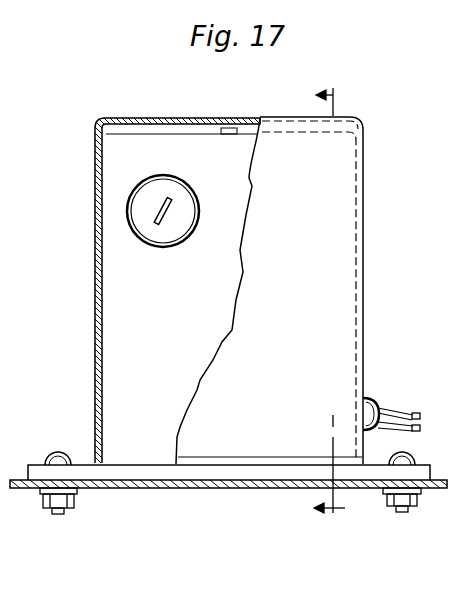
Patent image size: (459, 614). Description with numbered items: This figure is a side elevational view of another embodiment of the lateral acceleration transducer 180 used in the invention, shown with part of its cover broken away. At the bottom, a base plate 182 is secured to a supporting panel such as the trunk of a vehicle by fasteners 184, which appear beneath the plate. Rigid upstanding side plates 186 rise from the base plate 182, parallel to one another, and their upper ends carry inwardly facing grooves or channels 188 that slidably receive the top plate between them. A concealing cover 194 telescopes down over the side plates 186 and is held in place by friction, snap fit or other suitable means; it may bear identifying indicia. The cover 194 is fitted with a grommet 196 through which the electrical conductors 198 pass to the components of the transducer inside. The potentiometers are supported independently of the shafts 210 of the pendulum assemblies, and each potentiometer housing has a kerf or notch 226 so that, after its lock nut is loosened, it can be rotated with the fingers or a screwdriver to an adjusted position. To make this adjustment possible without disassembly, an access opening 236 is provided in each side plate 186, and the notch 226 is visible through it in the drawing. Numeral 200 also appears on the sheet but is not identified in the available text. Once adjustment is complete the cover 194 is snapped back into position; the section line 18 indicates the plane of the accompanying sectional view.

The section line 18- 18 is at (314, 303).
The lateral acceleration transducer 180 is at (222, 118).
The base plate 182 is at (37, 474).
The fasteners 184 is at (58, 502).
The side plates 186 is at (120, 283).
The grooves or channels 188 is at (444, 49).
The concealing cover 194 is at (366, 140).
The grommet 196 is at (366, 403).
The electrical conductors 198 is at (398, 412).
The housing component 200 is at (444, 120).
The shafts 210 is at (443, 160).
The kerf or notch 226 is at (161, 212).
The access opening 236 is at (185, 196).